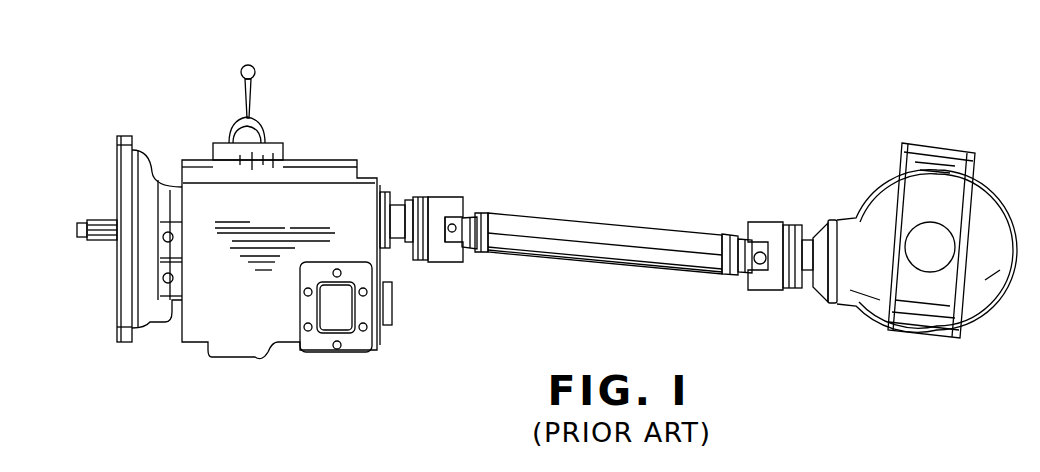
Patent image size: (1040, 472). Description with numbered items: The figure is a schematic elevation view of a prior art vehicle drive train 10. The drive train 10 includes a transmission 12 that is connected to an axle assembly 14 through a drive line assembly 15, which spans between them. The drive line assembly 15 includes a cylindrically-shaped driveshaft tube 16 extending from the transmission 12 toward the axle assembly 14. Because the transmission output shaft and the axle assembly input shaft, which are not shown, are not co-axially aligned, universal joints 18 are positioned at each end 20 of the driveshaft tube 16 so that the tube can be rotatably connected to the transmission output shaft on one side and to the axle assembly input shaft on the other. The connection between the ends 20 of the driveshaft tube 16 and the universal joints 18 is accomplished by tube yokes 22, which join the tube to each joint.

The vehicle drive train 10 is at (315, 83).
The transmission 12 is at (228, 328).
The axle assembly 14 is at (927, 330).
The drive line assembly 15 is at (430, 143).
The driveshaft tube 16 is at (577, 280).
The universal joints 18 is at (442, 198).
The ends of the driveshaft tube 20 is at (482, 269).
The tube yokes 22 is at (475, 212).